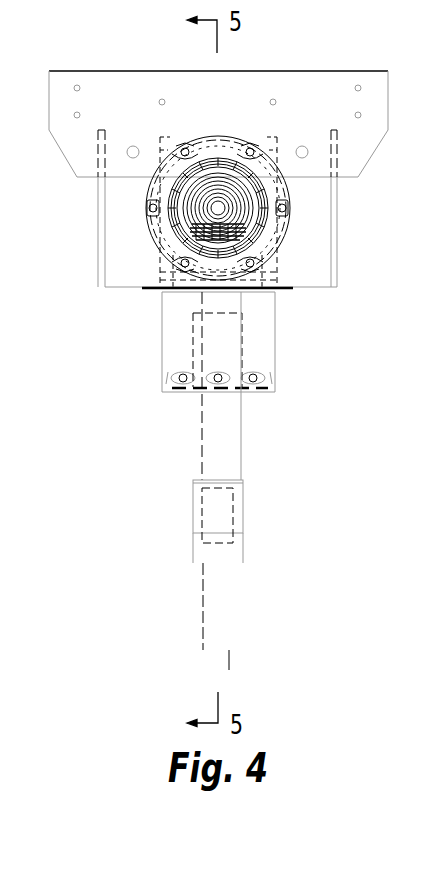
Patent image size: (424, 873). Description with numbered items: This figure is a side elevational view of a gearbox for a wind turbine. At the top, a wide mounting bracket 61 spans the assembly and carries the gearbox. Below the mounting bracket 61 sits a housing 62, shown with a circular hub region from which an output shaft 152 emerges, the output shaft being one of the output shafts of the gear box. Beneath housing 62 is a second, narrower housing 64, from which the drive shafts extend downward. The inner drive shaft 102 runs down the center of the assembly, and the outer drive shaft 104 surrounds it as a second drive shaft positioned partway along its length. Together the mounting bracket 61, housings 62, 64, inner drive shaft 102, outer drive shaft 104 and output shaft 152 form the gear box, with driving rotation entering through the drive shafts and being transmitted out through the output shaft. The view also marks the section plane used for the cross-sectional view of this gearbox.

The mounting bracket 61 is at (318, 72).
The housing 62 is at (115, 218).
The output shaft 152 is at (220, 208).
The housing 64 is at (275, 338).
The inner drive shaft 102 is at (232, 626).
The outer drive shaft 104 is at (243, 506).